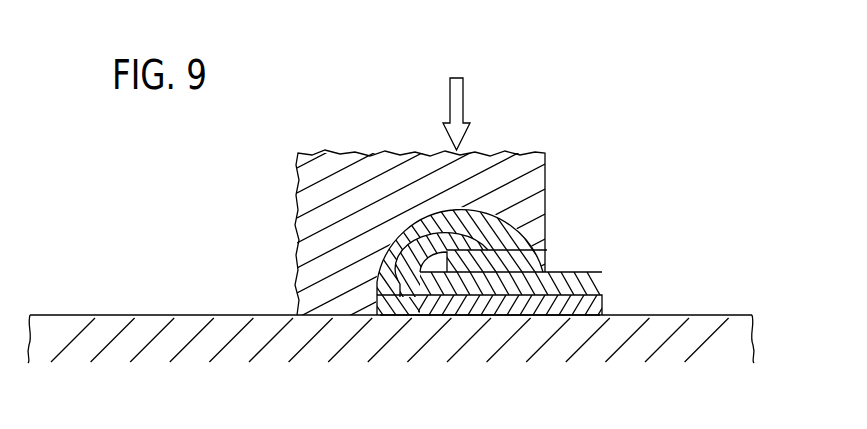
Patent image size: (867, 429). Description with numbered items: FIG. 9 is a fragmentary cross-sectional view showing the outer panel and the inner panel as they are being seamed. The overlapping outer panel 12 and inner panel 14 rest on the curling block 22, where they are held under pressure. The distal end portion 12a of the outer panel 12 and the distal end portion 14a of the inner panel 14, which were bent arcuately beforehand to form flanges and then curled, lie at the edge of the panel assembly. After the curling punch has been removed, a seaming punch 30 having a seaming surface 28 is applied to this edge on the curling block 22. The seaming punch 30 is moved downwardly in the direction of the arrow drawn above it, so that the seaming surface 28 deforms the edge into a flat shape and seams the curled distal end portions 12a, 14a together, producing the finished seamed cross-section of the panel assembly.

The outer panel 12 is at (604, 298).
The distal end portion of the outer panel 12a is at (435, 316).
The inner panel 14 is at (604, 274).
The distal end portion of the inner panel 14a is at (484, 246).
The curling block 22 is at (226, 332).
The seaming surface 28 is at (530, 224).
The seaming punch 30 is at (296, 180).